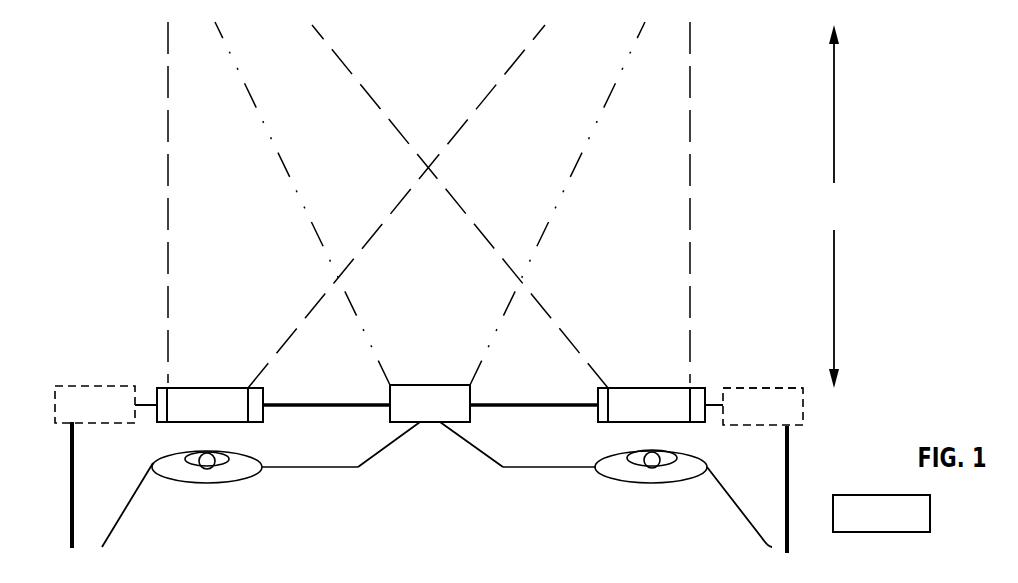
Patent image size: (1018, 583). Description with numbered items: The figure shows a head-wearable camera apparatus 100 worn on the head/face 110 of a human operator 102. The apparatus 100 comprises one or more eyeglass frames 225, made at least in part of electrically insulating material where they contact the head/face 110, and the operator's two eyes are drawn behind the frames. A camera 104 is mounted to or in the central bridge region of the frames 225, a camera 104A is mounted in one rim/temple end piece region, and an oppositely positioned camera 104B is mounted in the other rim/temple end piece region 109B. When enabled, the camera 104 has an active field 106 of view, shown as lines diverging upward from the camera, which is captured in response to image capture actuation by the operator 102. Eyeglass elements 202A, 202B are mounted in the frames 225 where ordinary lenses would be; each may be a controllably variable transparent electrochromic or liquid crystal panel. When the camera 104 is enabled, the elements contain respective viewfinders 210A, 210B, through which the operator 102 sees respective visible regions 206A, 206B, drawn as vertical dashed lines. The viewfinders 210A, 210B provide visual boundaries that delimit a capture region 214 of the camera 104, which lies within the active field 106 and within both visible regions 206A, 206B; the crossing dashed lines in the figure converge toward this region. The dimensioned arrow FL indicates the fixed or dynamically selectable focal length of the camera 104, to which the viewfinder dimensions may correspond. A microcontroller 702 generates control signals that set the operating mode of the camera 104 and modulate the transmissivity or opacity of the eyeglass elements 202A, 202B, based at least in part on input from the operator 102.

The apparatus 100 is at (64, 481).
The human operator 102 is at (55, 388).
The camera 104 is at (447, 419).
The camera 104A is at (72, 419).
The camera 104B is at (787, 422).
The active field of view 106 is at (447, 347).
The rim/temple end piece region 109B is at (797, 388).
The head/face 110 is at (124, 498).
The eyeglass element 202A is at (163, 388).
The eyeglass element 202B is at (707, 388).
The visible region 206A is at (180, 367).
The visible region 206B is at (649, 222).
The viewfinder 210A is at (182, 419).
The viewfinder 210B is at (623, 419).
The capture region 214 is at (403, 87).
The eyeglass frame 225 is at (787, 500).
The focal length FL is at (820, 221).
The microcontroller 702 is at (881, 513).